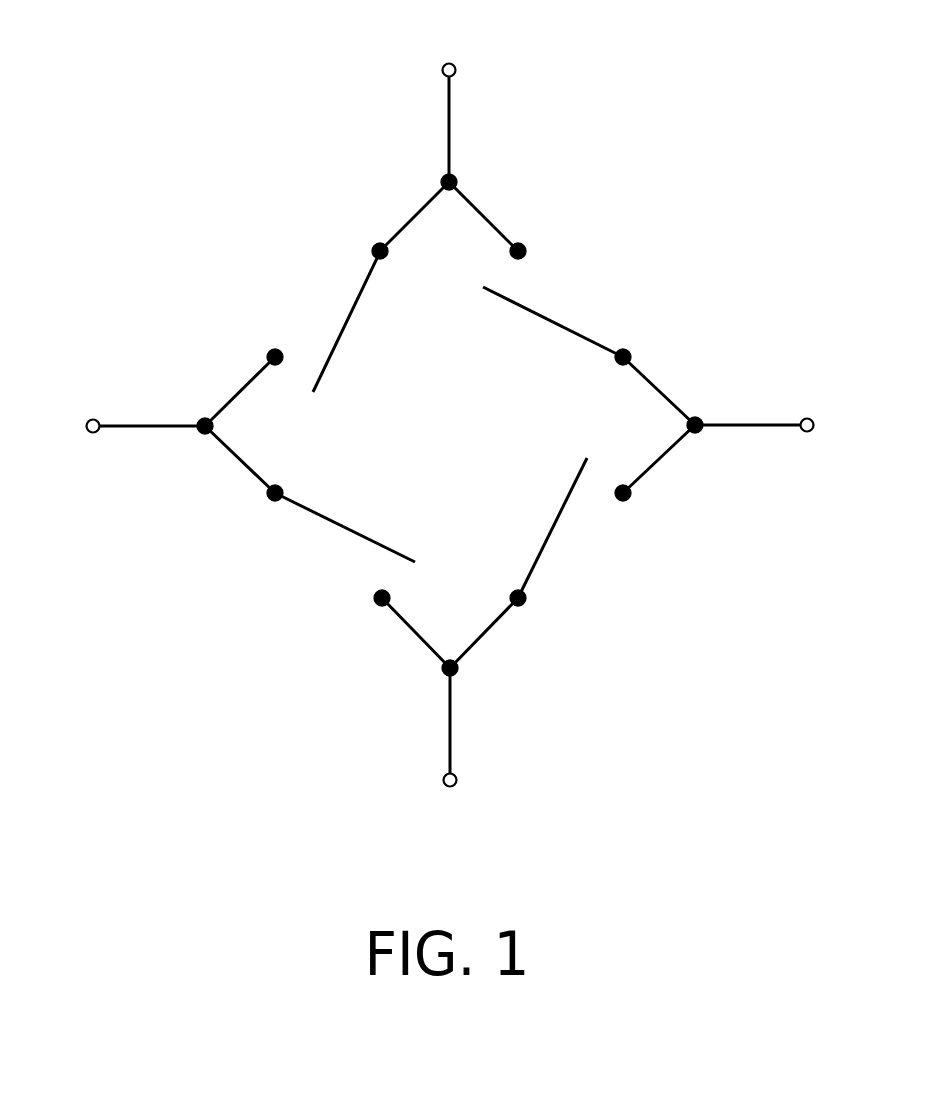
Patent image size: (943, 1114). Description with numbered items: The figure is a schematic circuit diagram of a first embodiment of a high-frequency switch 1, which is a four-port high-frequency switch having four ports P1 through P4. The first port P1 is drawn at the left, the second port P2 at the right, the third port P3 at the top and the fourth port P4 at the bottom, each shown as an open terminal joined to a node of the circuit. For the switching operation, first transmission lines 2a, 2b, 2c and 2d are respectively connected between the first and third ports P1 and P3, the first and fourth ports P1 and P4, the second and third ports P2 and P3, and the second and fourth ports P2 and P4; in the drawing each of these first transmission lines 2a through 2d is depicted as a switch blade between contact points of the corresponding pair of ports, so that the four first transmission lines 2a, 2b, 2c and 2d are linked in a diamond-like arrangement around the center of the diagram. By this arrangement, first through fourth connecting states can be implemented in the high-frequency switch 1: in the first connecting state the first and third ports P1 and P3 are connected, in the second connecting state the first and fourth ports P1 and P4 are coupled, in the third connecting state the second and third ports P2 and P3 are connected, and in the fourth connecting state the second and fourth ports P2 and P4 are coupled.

The high-frequency switch 1 is at (257, 177).
The first transmission line 2a is at (343, 320).
The first transmission line 2b is at (347, 530).
The first transmission line 2c is at (553, 317).
The first transmission line 2d is at (555, 527).
The first port P1 is at (161, 425).
The second port P2 is at (740, 425).
The third port P3 is at (449, 142).
The fourth port P4 is at (450, 712).